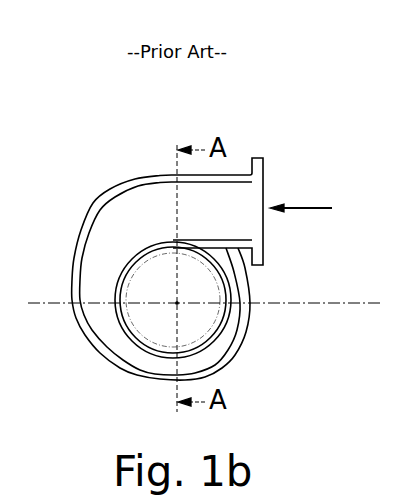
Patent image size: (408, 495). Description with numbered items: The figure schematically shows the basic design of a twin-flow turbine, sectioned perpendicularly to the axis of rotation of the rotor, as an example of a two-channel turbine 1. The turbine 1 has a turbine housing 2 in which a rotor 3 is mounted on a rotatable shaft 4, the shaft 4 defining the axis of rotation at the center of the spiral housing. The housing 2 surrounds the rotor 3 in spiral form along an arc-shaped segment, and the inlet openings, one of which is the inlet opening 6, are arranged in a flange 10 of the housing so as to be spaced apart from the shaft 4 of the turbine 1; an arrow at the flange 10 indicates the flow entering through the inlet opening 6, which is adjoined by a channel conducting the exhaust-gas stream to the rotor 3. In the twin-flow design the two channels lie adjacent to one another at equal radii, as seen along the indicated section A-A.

The turbine 1 is at (110, 190).
The flange 10 is at (263, 173).
The inlet opening 6 is at (263, 218).
The turbine housing 2 is at (240, 252).
The rotor 3 is at (198, 330).
The shaft 4 is at (176, 306).